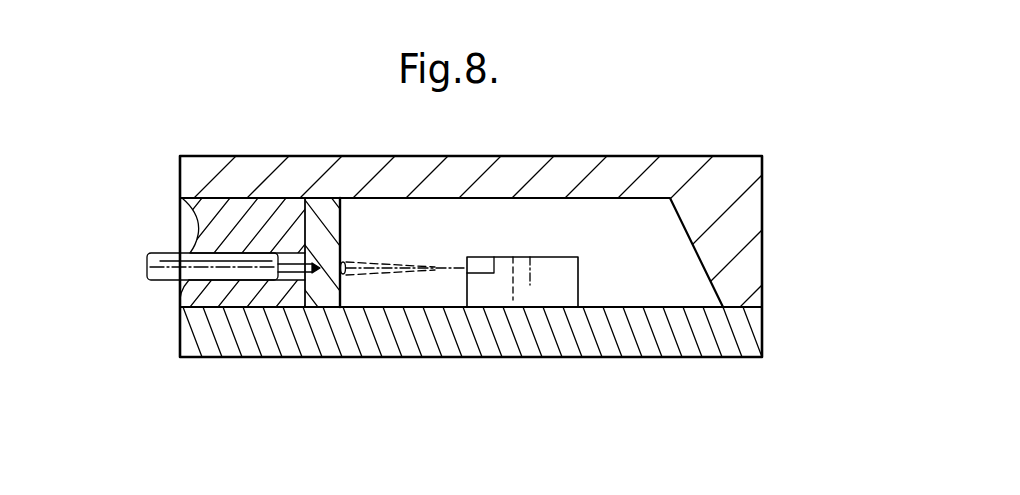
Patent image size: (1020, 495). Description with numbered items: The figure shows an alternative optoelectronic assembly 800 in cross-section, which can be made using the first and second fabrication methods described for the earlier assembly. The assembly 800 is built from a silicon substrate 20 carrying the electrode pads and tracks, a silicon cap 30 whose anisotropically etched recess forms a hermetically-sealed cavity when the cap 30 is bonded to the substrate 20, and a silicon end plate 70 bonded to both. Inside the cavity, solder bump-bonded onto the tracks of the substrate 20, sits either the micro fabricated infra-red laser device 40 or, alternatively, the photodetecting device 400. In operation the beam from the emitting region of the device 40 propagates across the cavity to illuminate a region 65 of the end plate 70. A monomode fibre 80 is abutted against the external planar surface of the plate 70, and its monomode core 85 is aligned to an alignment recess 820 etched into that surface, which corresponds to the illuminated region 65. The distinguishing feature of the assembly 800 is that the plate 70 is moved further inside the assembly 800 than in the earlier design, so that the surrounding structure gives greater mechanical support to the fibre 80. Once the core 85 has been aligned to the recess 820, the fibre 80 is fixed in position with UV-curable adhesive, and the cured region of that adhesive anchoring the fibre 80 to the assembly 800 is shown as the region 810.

The alternative assembly 800 is at (722, 130).
The silicon cap 30 is at (742, 226).
The silicon substrate 20 is at (703, 338).
The cured region of adhesive 810 is at (217, 228).
The alignment recess 820 is at (315, 277).
The silicon end plate 70 is at (322, 213).
The monomode fibre 80 is at (165, 283).
The monomode core 85 is at (297, 268).
The illuminated region 65 is at (345, 274).
The infra-red laser device 40 is at (522, 257).
The photodetecting device 400 is at (522, 257).